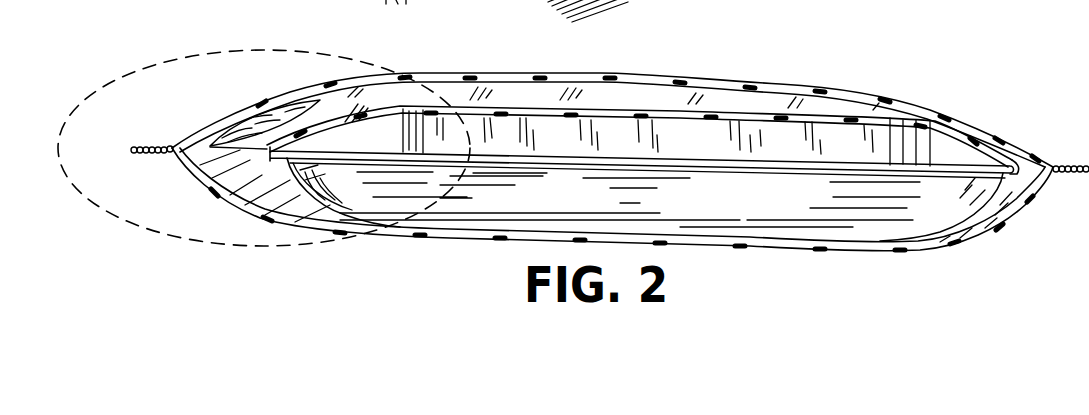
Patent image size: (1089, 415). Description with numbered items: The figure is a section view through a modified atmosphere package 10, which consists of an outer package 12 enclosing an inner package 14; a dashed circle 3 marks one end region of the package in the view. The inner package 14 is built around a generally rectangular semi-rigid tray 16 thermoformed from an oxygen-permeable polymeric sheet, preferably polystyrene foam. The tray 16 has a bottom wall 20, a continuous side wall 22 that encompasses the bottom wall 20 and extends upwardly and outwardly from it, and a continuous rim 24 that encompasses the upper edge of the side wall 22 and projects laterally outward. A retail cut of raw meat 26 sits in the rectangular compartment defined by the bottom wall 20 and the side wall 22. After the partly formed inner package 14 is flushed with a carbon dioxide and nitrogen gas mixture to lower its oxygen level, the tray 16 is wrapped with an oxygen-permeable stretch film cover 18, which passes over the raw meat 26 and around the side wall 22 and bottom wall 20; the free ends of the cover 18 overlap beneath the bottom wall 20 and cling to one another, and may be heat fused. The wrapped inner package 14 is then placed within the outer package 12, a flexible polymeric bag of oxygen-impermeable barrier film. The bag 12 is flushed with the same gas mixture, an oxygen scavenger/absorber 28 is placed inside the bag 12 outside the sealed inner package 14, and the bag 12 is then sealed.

The detail circle for FIG. 3 is at (161, 61).
The modified atmosphere package 10 is at (610, 156).
The outer package 12 is at (747, 84).
The inner package 14 is at (760, 111).
The tray 16 is at (933, 222).
The cover 18 is at (613, 110).
The bottom wall 20 is at (862, 240).
The continuous side wall 22 is at (770, 207).
The continuous rim 24 is at (980, 165).
The retail cut of raw meat 26 is at (467, 120).
The oxygen scavenger/absorber 28 is at (268, 108).